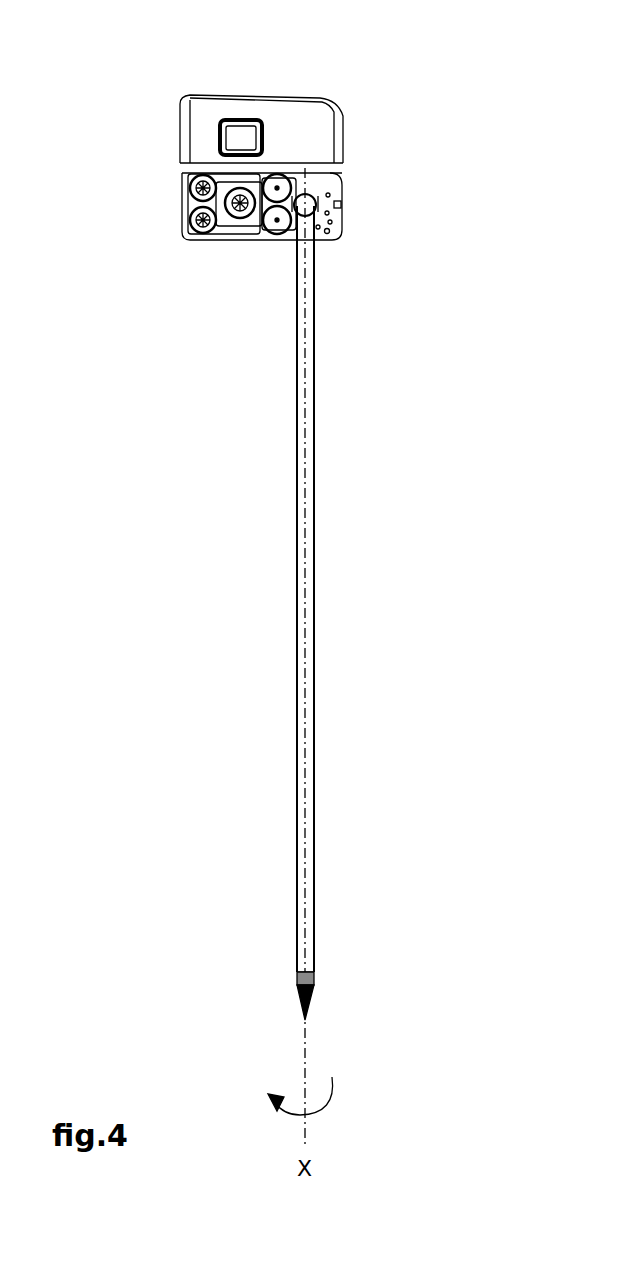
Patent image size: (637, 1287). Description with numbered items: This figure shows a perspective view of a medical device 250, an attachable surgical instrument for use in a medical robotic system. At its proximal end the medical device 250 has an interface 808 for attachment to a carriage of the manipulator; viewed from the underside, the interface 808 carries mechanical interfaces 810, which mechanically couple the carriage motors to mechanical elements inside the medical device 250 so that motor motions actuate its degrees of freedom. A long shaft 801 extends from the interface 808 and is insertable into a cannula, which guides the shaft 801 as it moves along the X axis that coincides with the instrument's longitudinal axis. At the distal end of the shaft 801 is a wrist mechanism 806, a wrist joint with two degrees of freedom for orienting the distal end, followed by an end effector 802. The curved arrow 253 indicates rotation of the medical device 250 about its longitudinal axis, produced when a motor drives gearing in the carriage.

The medical device 250 is at (458, 175).
The arrow 253 is at (322, 1107).
The shaft 801 is at (315, 574).
The end effector 802 is at (318, 991).
The wrist mechanism 806 is at (300, 977).
The interface 808 is at (215, 88).
The mechanical interfaces 810 is at (186, 242).